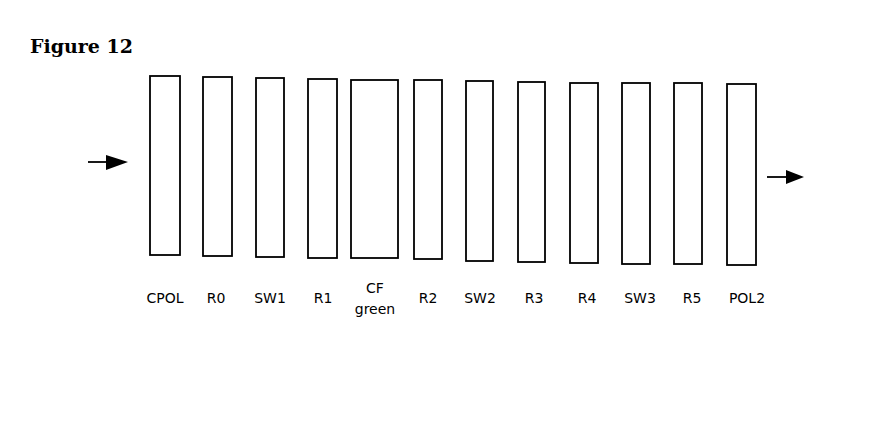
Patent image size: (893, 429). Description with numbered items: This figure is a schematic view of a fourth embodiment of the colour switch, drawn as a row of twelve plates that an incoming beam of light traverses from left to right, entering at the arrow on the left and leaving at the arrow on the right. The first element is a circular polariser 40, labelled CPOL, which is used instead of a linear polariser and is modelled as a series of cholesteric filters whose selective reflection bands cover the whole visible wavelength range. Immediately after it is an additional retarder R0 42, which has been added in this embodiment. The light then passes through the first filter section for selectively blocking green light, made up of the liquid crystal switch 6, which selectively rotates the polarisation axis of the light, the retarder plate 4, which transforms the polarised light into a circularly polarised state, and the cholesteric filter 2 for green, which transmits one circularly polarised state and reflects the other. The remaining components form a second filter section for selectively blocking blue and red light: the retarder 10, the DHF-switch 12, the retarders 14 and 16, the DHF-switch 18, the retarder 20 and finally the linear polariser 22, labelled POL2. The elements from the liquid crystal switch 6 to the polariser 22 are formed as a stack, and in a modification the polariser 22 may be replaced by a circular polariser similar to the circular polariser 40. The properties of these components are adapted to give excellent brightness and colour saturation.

The circular polariser 40 is at (165, 165).
The retarder R0 42 is at (217, 166).
The liquid crystal switch 6 is at (270, 167).
The retarder plate 4 is at (322, 168).
The cholesteric filter 2 is at (374, 169).
The retarder R1 10 is at (428, 169).
The DHF-switch SW2 12 is at (479, 171).
The retarder R2 14 is at (531, 172).
The retarder R3 16 is at (584, 173).
The DHF-switch SW3 18 is at (636, 173).
The retarder R4 20 is at (688, 173).
The linear polariser POL2 22 is at (741, 174).